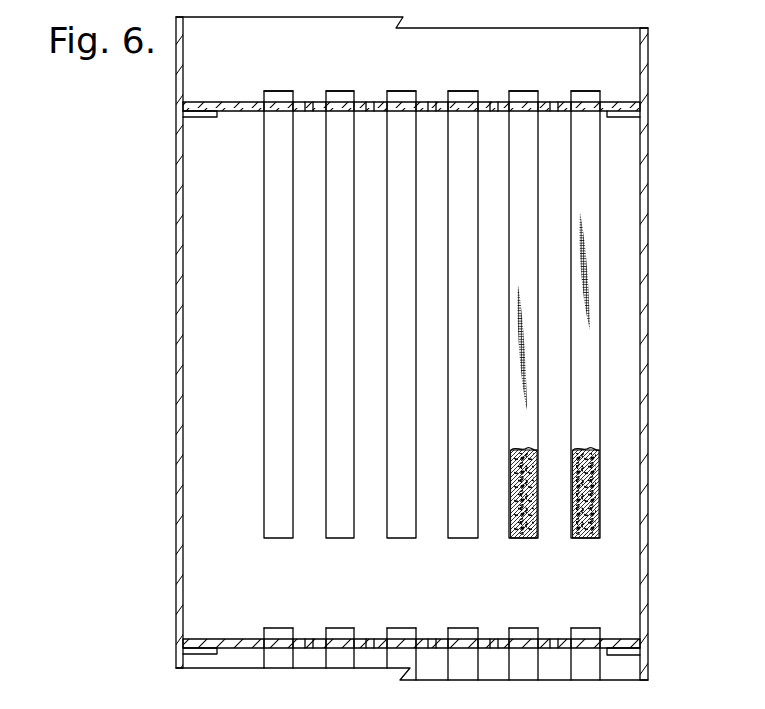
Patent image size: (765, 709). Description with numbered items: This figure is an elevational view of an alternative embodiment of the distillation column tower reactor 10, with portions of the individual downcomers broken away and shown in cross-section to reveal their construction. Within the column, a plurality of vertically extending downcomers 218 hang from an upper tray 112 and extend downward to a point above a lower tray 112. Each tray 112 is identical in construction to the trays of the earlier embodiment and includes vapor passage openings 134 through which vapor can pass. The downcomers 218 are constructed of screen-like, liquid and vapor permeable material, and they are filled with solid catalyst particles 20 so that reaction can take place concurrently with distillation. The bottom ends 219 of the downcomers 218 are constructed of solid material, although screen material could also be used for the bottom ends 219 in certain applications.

The distillation column tower reactor 10 is at (641, 421).
The tray 112 is at (610, 106).
The vapor passage openings 134 is at (553, 101).
The downcomers 218 is at (600, 194).
The bottom ends 219 is at (530, 538).
The solid catalyst particles 20 is at (596, 487).